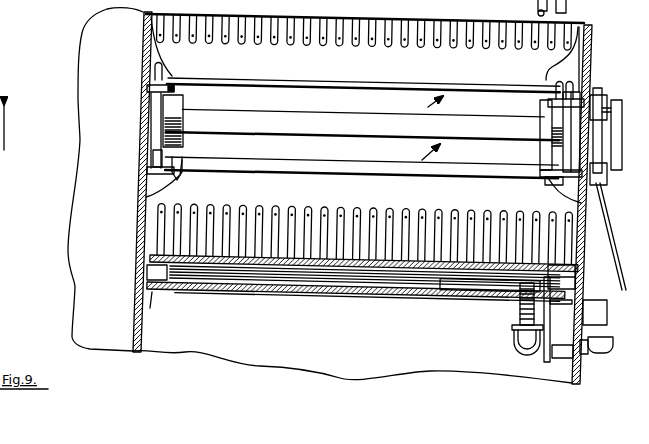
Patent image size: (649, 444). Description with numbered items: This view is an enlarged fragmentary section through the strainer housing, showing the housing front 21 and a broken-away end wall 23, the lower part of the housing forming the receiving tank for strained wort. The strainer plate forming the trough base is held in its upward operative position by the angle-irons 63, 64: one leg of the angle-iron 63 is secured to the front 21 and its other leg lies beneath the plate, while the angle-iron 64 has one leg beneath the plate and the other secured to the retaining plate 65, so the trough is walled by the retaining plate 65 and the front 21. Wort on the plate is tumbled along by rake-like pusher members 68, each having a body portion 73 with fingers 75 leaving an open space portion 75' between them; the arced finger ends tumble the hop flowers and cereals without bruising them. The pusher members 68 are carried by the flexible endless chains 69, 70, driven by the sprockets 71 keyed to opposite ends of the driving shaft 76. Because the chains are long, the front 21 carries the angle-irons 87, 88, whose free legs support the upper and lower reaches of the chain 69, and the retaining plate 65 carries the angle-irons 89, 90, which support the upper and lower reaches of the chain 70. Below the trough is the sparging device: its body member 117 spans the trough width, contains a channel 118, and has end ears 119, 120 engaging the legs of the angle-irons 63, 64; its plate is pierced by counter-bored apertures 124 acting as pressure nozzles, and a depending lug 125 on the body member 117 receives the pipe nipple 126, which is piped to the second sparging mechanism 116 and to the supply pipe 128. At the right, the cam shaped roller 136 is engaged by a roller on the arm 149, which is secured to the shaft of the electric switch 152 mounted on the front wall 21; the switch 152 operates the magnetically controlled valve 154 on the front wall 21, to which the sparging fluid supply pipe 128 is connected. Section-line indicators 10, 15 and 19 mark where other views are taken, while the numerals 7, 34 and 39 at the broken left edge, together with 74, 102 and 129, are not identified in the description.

The section line 7 is at (12, 127).
The section line 10- 10 is at (373, 98).
The section line 15- 15 is at (523, 200).
The section line 19- 19 is at (262, 190).
The front wall 21 is at (590, 44).
The end wall 23 is at (76, 314).
The partial reference 34 is at (8, 229).
The partial reference 39 is at (8, 195).
The angle-iron 63 is at (582, 278).
The angle-iron 64 is at (136, 275).
The retaining plate 65 is at (133, 332).
The rake-like pusher member 68 is at (448, 140).
The endless chain 69 is at (568, 78).
The endless chain 70 is at (143, 60).
The driving sprocket 71 is at (187, 115).
The body portion 73 is at (333, 68).
The lower fin plate 74 is at (460, 205).
The finger 75 is at (363, 166).
The open space portion 75' is at (364, 162).
The driving shaft 76 is at (266, 100).
The angle-iron 87 is at (556, 98).
The angle-iron 88 is at (567, 193).
The angle-iron 89 is at (177, 91).
The angle-iron 90 is at (173, 183).
The top fitting 102 is at (542, 12).
The second sparging mechanism 116 is at (332, 298).
The body member 117 is at (186, 284).
The channel 118 is at (237, 288).
The ear 119 is at (162, 307).
The ear 120 is at (558, 319).
The apertures 124 is at (446, 299).
The depending lug 125 is at (520, 306).
The pipe nipple 126 is at (517, 320).
The supply pipe 128 is at (565, 362).
The insert plate 129 is at (437, 292).
The cam shaped roller 136 is at (613, 100).
The arm 149 is at (590, 146).
The electric switch 152 is at (598, 186).
The magnetically controlled valve 154 is at (593, 364).